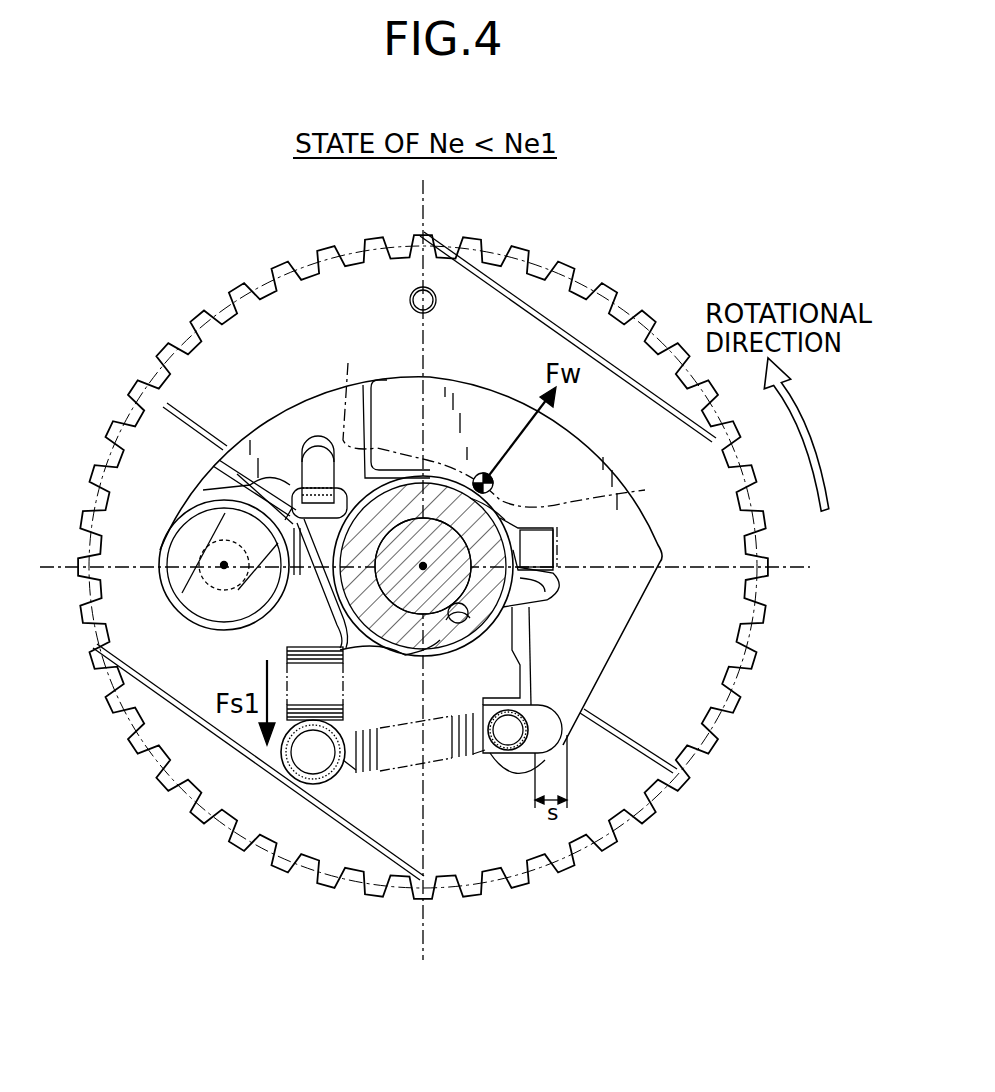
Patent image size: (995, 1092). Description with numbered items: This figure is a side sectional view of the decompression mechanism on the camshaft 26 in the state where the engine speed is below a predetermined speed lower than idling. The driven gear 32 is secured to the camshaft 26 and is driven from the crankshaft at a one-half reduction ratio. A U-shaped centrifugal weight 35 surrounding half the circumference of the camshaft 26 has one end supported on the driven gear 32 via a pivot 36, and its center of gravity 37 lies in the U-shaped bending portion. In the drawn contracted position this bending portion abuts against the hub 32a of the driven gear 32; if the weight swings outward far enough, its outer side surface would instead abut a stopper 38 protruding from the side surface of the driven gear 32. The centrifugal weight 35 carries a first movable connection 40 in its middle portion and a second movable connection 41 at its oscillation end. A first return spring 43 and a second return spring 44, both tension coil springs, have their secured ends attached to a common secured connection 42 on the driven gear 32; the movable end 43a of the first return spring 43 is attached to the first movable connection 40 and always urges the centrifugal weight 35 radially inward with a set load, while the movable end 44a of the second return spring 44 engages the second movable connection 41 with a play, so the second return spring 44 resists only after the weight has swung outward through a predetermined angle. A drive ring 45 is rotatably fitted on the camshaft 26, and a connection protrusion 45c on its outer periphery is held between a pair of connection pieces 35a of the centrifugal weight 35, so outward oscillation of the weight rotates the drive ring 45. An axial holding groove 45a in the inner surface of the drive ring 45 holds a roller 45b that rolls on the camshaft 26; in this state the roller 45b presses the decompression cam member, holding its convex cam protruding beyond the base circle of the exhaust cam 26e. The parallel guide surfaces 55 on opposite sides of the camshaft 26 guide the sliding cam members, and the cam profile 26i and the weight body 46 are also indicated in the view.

The driven gear 32 is at (280, 313).
The stopper 38 is at (410, 299).
The weight body 46 is at (243, 412).
The centrifugal weight 35 is at (465, 395).
The exhaust cam 26e is at (483, 424).
The inner cam profile 26i is at (625, 495).
The first movable connection 40 is at (317, 457).
The camshaft 26 is at (403, 515).
The hub 32a is at (520, 517).
The center of gravity 37 is at (477, 470).
The guide surface 55 is at (488, 517).
The connection piece 35a is at (527, 555).
The connection protrusion 45c is at (543, 593).
The pivot 36 is at (193, 592).
The movable end 43a is at (250, 483).
The first return spring 43 is at (287, 648).
The drive ring 45 is at (380, 650).
The holding groove 45a is at (425, 652).
The roller 45b is at (461, 628).
The common secured connection 42 is at (300, 760).
The second return spring 44 is at (377, 773).
The movable end 44a is at (565, 717).
The second movable connection 41 is at (508, 752).